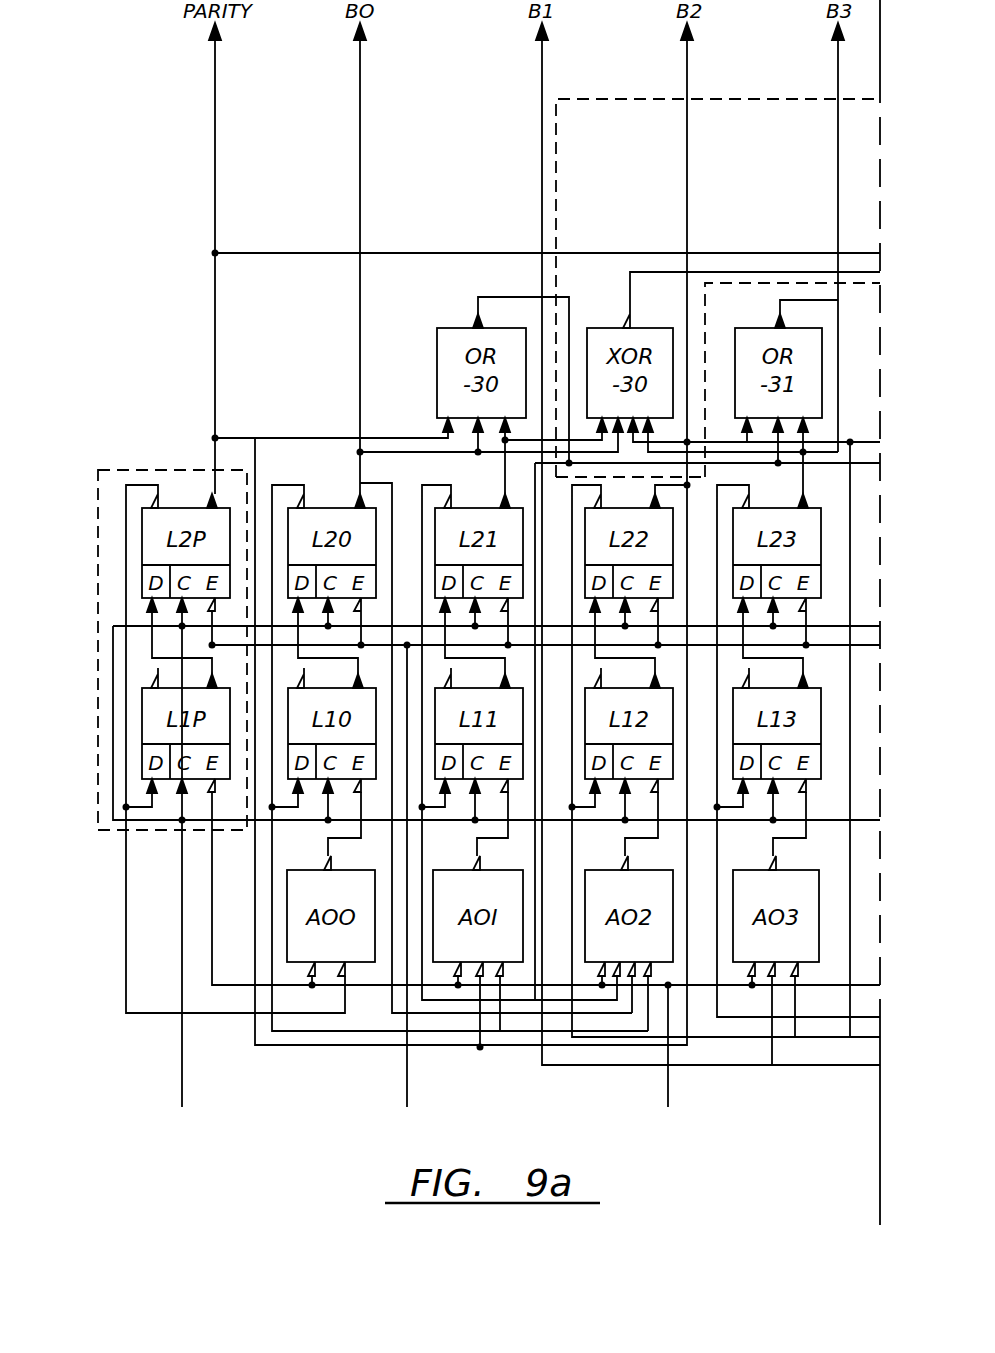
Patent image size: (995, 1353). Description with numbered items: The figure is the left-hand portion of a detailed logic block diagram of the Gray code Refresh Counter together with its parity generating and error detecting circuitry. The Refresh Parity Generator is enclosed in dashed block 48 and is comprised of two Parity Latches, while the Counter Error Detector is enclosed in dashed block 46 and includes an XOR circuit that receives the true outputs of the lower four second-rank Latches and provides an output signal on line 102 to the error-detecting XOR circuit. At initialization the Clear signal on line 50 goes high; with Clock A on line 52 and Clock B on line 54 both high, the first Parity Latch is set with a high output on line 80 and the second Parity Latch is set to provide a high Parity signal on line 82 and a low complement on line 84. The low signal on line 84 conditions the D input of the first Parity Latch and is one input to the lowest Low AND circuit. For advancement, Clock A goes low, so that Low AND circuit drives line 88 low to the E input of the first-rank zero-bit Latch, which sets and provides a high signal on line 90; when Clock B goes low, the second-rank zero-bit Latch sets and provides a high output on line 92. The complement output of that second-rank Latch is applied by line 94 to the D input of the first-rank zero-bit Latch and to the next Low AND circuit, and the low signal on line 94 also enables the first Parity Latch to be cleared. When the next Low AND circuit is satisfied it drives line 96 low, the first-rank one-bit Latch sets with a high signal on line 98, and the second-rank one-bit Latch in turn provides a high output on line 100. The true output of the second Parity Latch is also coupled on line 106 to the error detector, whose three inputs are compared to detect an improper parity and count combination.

The dashed block 46 is at (626, 102).
The dashed block 48 is at (156, 474).
The line 50 is at (180, 1060).
The line 52 is at (680, 1091).
The line 54 is at (408, 1089).
The line 80 is at (166, 650).
The line 82 is at (208, 500).
The line 84 is at (120, 888).
The line 88 is at (322, 854).
The line 90 is at (344, 666).
The line 92 is at (356, 478).
The line 94 is at (220, 904).
The line 96 is at (472, 854).
The line 98 is at (491, 666).
The line 100 is at (503, 472).
The line 102 is at (624, 280).
The line 106 is at (390, 254).